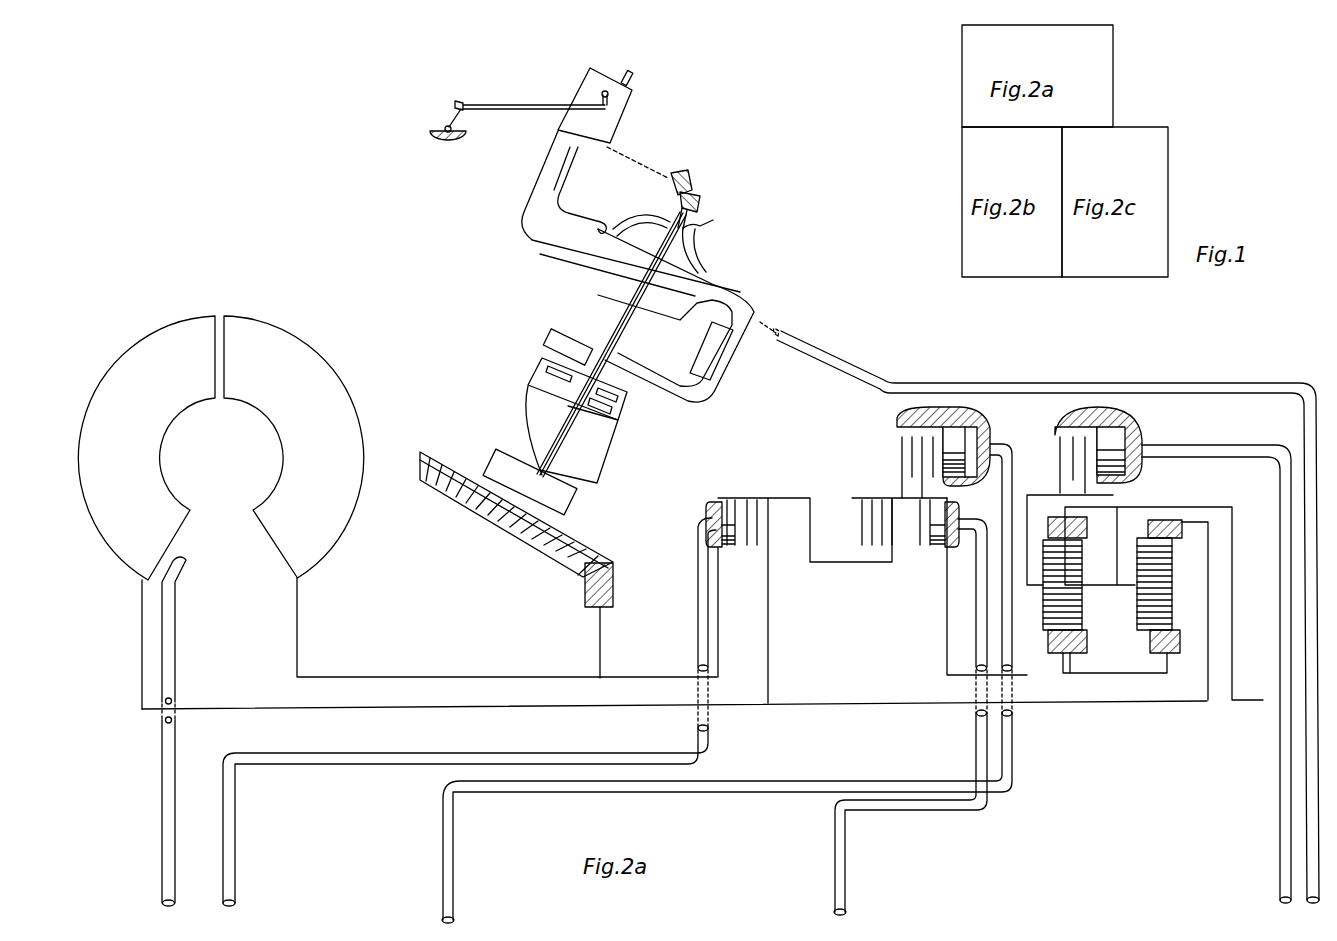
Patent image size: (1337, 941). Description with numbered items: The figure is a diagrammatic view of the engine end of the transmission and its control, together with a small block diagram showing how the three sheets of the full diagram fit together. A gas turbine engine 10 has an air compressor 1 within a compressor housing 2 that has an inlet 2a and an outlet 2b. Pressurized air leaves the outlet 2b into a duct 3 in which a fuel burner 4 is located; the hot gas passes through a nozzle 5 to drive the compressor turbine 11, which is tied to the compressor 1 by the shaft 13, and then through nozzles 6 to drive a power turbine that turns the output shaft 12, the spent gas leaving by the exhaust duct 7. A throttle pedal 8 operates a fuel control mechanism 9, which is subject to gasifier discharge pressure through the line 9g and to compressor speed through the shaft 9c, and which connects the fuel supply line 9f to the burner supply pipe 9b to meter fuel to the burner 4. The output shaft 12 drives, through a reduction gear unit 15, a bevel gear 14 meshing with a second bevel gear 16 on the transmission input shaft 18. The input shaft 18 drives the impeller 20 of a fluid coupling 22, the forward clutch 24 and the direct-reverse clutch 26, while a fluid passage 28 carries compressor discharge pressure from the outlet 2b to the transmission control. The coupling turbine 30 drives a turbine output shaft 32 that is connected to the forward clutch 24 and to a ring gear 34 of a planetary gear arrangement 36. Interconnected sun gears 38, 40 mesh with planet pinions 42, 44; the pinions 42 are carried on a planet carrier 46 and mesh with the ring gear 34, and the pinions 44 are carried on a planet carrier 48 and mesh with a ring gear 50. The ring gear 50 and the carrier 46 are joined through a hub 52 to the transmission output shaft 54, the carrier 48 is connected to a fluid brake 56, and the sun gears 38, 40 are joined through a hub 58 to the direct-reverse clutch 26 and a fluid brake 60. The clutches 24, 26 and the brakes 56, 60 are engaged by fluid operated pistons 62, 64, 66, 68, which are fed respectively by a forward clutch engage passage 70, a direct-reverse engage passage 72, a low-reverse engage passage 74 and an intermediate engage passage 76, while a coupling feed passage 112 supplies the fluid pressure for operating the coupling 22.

The air compressor 1 is at (690, 257).
The compressor housing 2 is at (742, 288).
The inlet 2a is at (698, 227).
The outlet 2b is at (762, 318).
The duct 3 is at (727, 358).
The fuel burner 4 is at (707, 373).
The nozzle 5 is at (552, 341).
The nozzles 6 is at (535, 373).
The exhaust duct 7 is at (592, 468).
The throttle pedal 8 is at (445, 125).
The fuel control mechanism 9 is at (618, 93).
The fuel burner supply pipe 9b is at (533, 243).
The compressor speed shaft 9c is at (678, 170).
The fuel supply line 9f is at (633, 80).
The gasifier discharge pressure line 9g is at (575, 183).
The gas turbine engine 10 is at (480, 402).
The compressor turbine 11 is at (606, 394).
The output shaft 12 is at (560, 488).
The shaft 13 is at (620, 327).
The bevel gear 14 is at (593, 550).
The reduction gear unit 15 is at (503, 463).
The bevel gear 16 is at (613, 590).
The transmission input shaft 18 is at (498, 677).
The impeller 20 is at (320, 547).
The fluid coupling 22 is at (305, 318).
The forward clutch 24 is at (767, 492).
The direct-reverse clutch 26 is at (903, 564).
The fluid passage 28 is at (830, 360).
The turbine 30 is at (127, 550).
The turbine output shaft 32 is at (636, 710).
The ring gear 34 is at (1182, 532).
The planetary gear arrangement 36 is at (1132, 620).
The sun gear 38 is at (1187, 650).
The sun gear 40 is at (1080, 660).
The planetary pinions 42 is at (1135, 605).
The planetary pinions 44 is at (1050, 625).
The planet carrier 46 is at (1127, 563).
The planet carrier 48 is at (1040, 587).
The ring gear 50 is at (1080, 527).
The hub 52 is at (1195, 505).
The transmission output shaft 54 is at (1248, 708).
The fluid brake 56 is at (1148, 428).
The hub 58 is at (943, 638).
The fluid brake 60 is at (890, 437).
The fluid operated piston 62 is at (745, 546).
The fluid operated piston 64 is at (920, 545).
The fluid operated piston 66 is at (1103, 428).
The fluid operated piston 68 is at (957, 432).
The forward clutch engage passage 70 is at (705, 733).
The direct-reverse engage passage 72 is at (987, 790).
The low-reverse engage passage 74 is at (1277, 590).
The intermediate engage passage 76 is at (1015, 748).
The coupling feed passage 112 is at (170, 667).